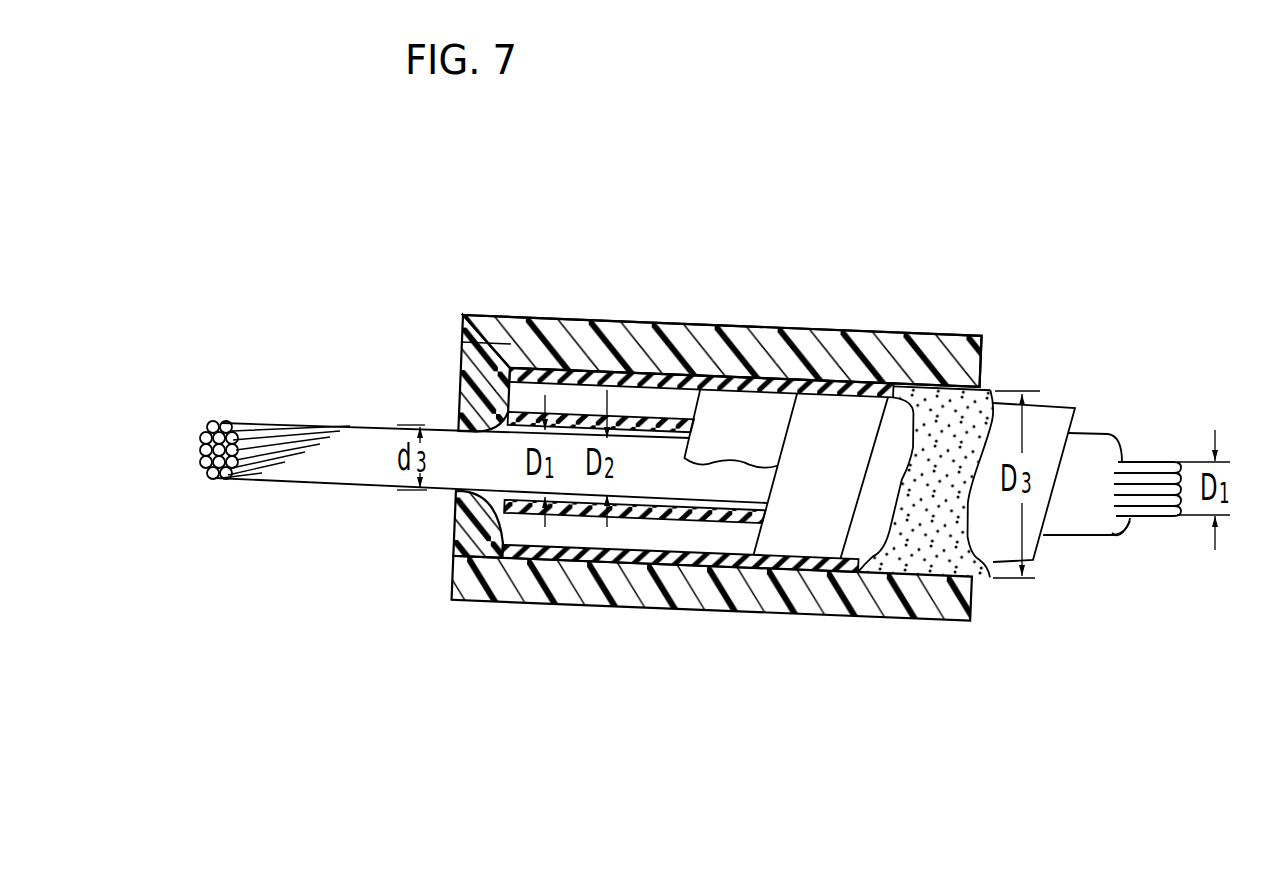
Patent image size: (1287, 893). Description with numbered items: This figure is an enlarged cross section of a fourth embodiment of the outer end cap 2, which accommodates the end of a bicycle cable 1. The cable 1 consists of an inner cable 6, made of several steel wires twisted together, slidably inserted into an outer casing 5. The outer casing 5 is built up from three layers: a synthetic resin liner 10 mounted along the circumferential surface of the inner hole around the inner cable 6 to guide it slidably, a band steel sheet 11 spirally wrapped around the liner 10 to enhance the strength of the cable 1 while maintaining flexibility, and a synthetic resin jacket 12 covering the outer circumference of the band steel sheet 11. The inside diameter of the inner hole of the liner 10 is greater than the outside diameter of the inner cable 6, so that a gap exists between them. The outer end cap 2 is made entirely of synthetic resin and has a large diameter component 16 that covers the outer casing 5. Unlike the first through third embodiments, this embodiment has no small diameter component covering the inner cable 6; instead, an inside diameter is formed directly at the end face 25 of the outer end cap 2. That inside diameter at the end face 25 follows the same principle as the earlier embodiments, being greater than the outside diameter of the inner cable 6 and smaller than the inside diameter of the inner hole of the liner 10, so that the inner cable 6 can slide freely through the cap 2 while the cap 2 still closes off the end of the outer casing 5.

The bicycle cable 1 is at (1054, 394).
The outer end cap 2 is at (892, 331).
The outer casing 5 is at (1040, 567).
The inner cable 6 is at (1141, 466).
The synthetic resin liner 10 is at (700, 523).
The band steel sheet 11 is at (799, 543).
The synthetic resin jacket 12 is at (857, 572).
The large diameter component 16 is at (643, 347).
The end face 25 is at (462, 508).